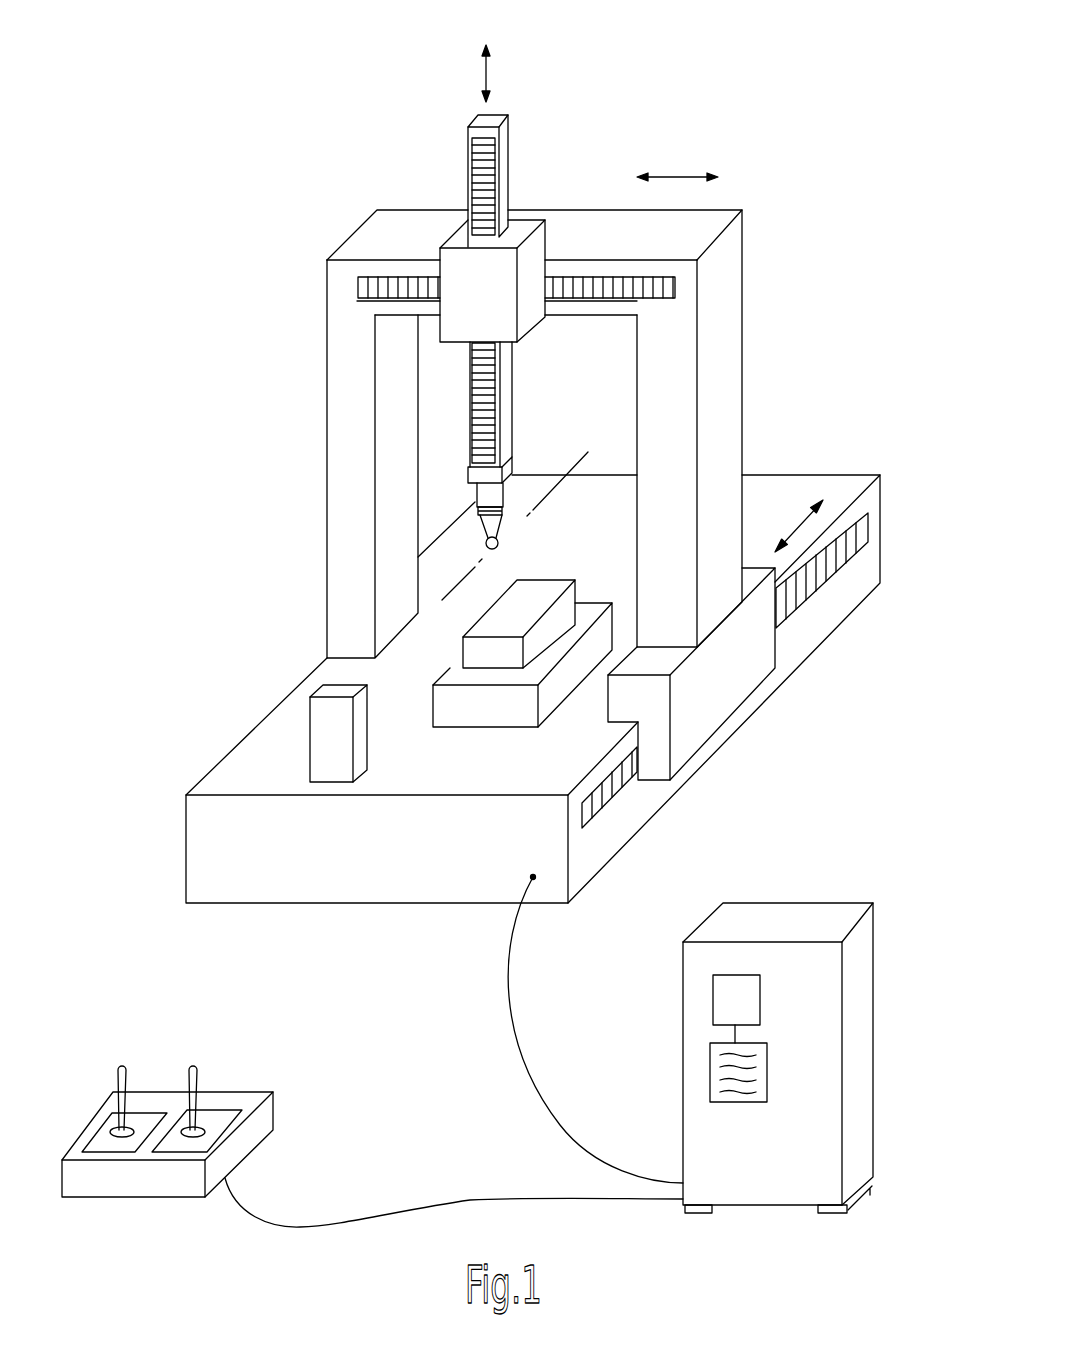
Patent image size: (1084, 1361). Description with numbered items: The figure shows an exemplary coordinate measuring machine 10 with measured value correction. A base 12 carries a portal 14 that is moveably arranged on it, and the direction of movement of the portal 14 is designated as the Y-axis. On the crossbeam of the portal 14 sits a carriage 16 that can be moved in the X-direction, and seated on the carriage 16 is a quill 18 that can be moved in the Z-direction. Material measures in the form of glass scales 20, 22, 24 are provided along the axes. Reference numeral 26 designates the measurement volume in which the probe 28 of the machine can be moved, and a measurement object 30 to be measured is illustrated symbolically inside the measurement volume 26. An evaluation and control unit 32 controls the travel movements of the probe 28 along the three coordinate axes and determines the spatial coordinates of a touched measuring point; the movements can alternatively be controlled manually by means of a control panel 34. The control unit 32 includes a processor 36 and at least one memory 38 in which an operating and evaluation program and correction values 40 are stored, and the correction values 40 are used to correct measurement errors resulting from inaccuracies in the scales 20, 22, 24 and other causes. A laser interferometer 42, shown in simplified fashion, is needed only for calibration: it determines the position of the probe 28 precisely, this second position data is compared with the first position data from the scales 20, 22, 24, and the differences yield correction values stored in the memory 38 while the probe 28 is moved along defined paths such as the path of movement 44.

The coordinate measuring machine 10 is at (818, 150).
The base 12 is at (238, 768).
The portal 14 is at (340, 383).
The carriage 16 is at (460, 242).
The quill 18 is at (477, 120).
The material measure 20 is at (823, 578).
The material measure 22 is at (667, 288).
The material measure 24 is at (483, 163).
The measurement volume 26 is at (588, 370).
The probe 28 is at (485, 530).
The measurement object 30 is at (480, 707).
The evaluation and control unit 32 is at (785, 927).
The control panel 34 is at (270, 1060).
The processor 36 is at (760, 1000).
The memory 38 is at (732, 1102).
The correction values 40 is at (750, 1077).
The laser interferometer 42 is at (317, 720).
The path of movement 44 is at (545, 498).